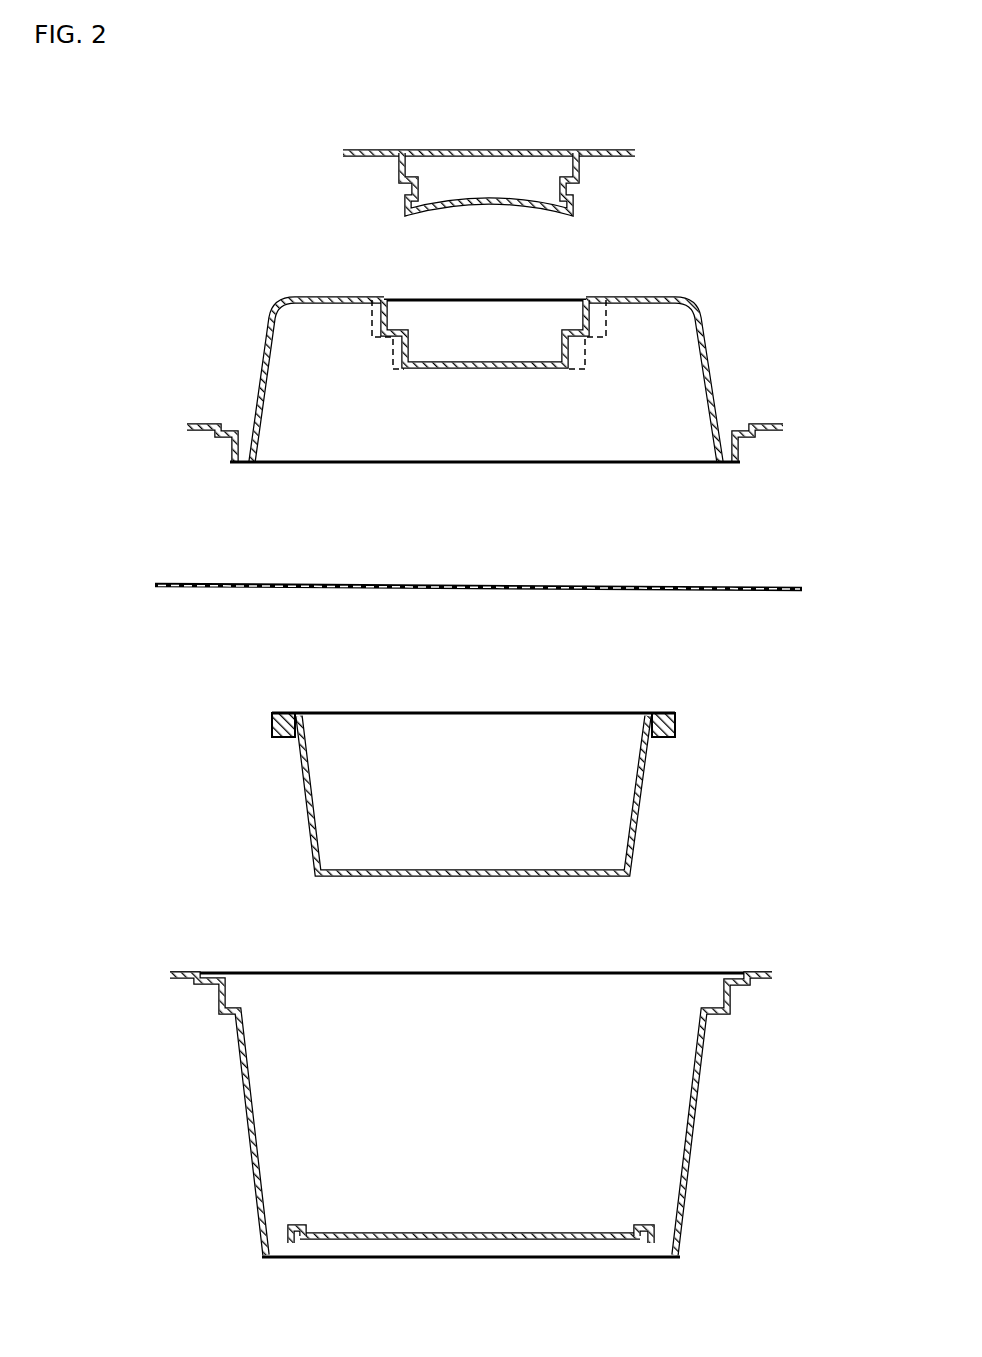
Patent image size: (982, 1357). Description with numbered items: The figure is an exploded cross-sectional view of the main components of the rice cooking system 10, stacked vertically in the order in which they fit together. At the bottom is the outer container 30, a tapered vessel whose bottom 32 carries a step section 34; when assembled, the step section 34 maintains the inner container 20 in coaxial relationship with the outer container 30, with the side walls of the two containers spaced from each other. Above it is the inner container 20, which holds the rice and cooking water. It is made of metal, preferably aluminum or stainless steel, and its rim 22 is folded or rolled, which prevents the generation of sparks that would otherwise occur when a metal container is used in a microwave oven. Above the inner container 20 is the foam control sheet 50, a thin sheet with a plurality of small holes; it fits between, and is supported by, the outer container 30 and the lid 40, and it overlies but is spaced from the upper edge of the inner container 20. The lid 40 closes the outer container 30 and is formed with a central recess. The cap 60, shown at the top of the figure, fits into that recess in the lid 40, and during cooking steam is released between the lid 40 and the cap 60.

The rice cooking system 10 is at (481, 1290).
The inner container 20 is at (662, 793).
The rim 22 is at (676, 724).
The outer container 30 is at (716, 1078).
The bottom 32 is at (514, 1236).
The step section 34 is at (648, 1230).
The lid 40 is at (725, 387).
The foam control sheet 50 is at (748, 573).
The cap 60 is at (548, 142).